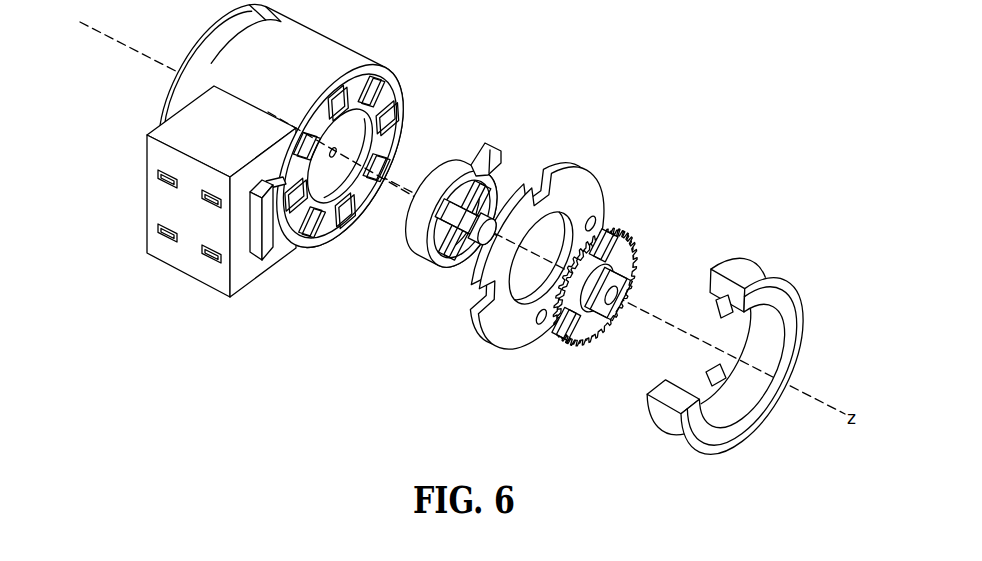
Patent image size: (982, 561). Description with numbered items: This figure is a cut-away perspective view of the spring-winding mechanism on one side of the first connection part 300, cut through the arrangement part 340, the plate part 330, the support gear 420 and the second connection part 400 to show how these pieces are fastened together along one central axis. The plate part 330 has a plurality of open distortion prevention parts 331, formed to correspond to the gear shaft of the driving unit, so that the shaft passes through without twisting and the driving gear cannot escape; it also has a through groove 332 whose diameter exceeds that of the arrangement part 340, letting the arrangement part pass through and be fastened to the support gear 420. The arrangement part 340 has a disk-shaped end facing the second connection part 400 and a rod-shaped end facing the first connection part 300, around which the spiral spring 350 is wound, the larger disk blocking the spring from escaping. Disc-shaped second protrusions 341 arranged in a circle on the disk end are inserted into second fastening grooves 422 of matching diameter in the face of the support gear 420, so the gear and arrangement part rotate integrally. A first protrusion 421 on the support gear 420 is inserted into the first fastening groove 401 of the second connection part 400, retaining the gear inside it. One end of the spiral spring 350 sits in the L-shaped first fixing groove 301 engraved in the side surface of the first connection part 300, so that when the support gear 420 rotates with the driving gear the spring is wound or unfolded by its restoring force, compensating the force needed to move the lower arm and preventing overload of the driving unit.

The first connection part 300 is at (293, 148).
The first fixing groove 301 is at (408, 133).
The plate part 330 is at (554, 255).
The distortion prevention part 331 is at (598, 258).
The through groove 332 is at (511, 230).
The arrangement part 340 is at (472, 229).
The second protrusion 341 is at (480, 228).
The spiral spring 350 is at (469, 148).
The second connection part 400 is at (732, 359).
The first fastening groove 401 is at (721, 337).
The support gear 420 is at (617, 301).
The first protrusion 421 is at (641, 293).
The second fastening groove 422 is at (583, 350).